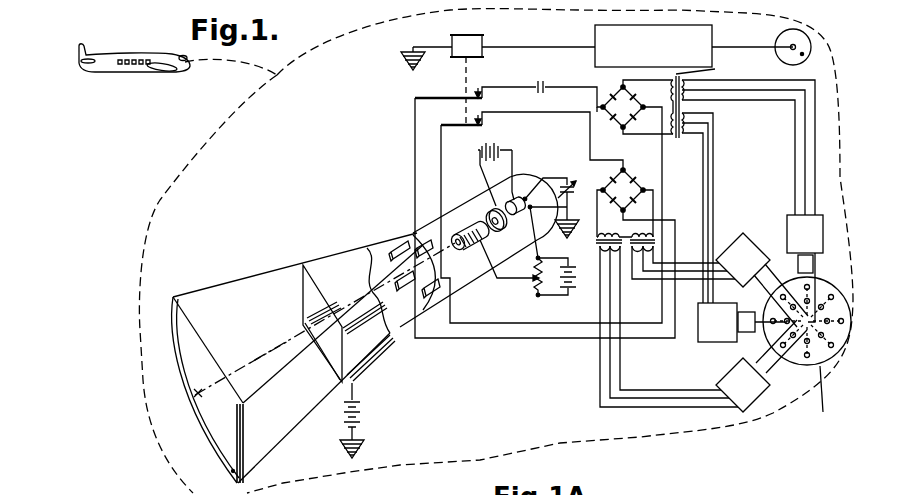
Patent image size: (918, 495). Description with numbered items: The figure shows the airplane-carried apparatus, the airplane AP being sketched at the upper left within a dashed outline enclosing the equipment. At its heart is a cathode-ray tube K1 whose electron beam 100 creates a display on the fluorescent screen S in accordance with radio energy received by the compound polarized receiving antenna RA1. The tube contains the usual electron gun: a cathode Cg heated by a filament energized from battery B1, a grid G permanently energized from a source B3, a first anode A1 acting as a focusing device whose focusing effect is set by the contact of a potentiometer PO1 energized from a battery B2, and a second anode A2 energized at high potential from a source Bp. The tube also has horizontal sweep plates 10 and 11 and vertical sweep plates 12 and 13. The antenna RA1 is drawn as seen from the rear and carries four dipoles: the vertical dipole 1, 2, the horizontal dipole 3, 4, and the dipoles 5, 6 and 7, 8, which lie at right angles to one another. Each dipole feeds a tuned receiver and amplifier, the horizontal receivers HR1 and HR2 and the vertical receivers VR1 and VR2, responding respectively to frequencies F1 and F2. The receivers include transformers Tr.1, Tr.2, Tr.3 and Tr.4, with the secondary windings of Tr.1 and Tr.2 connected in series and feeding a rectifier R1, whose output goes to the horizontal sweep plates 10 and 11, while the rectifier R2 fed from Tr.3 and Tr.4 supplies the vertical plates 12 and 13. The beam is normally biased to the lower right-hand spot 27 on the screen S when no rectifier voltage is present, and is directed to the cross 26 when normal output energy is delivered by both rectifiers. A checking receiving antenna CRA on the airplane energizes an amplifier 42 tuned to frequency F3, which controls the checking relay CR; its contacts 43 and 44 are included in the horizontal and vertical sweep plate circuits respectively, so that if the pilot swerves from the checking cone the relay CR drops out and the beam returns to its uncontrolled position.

The airplane AP is at (127, 54).
The cathode-ray tube K1 is at (212, 287).
The fluorescent screen S is at (173, 331).
The cross 26 is at (199, 392).
The spot 27 is at (232, 471).
The electron beam 100 is at (287, 342).
The second anode A2 is at (328, 356).
The horizontal sweep plate 10 is at (403, 249).
The horizontal sweep plate 11 is at (429, 297).
The vertical sweep plate 12 is at (431, 243).
The vertical sweep plate 13 is at (404, 292).
The high potential source Bp is at (359, 413).
The first anode A1 is at (468, 230).
The grid G is at (494, 212).
The cathode Cg is at (515, 201).
The source B3 is at (487, 145).
The battery B1 is at (567, 195).
The battery B2 is at (564, 282).
The potentiometer PO1 is at (536, 292).
The checking relay CR is at (481, 45).
The contact 43 is at (465, 99).
The contact 44 is at (465, 125).
The amplifier 42 is at (666, 46).
The frequency F3 is at (712, 26).
The checking receiving antenna CRA is at (761, 48).
The transformer Tr.2 is at (707, 68).
The rectifier R1 is at (636, 105).
The transformer Tr.1 is at (740, 189).
The rectifier R2 is at (614, 178).
The transformer Tr.3 is at (597, 241).
The transformer Tr.4 is at (656, 242).
The radio receiver VR2 is at (743, 260).
The radio receiver VR1 is at (743, 385).
The radio receiver HR1 is at (717, 322).
The radio receiver HR2 is at (805, 234).
The frequency F1 is at (776, 292).
The frequency F2 is at (781, 318).
The compound polarized receiving antenna RA1 is at (799, 357).
The dipole 1 is at (811, 294).
The dipole 2 is at (801, 352).
The dipole 3 is at (769, 310).
The dipole 4 is at (834, 332).
The dipole 5 is at (787, 287).
The dipole 6 is at (824, 348).
The dipole 7 is at (772, 343).
The dipole 8 is at (829, 307).